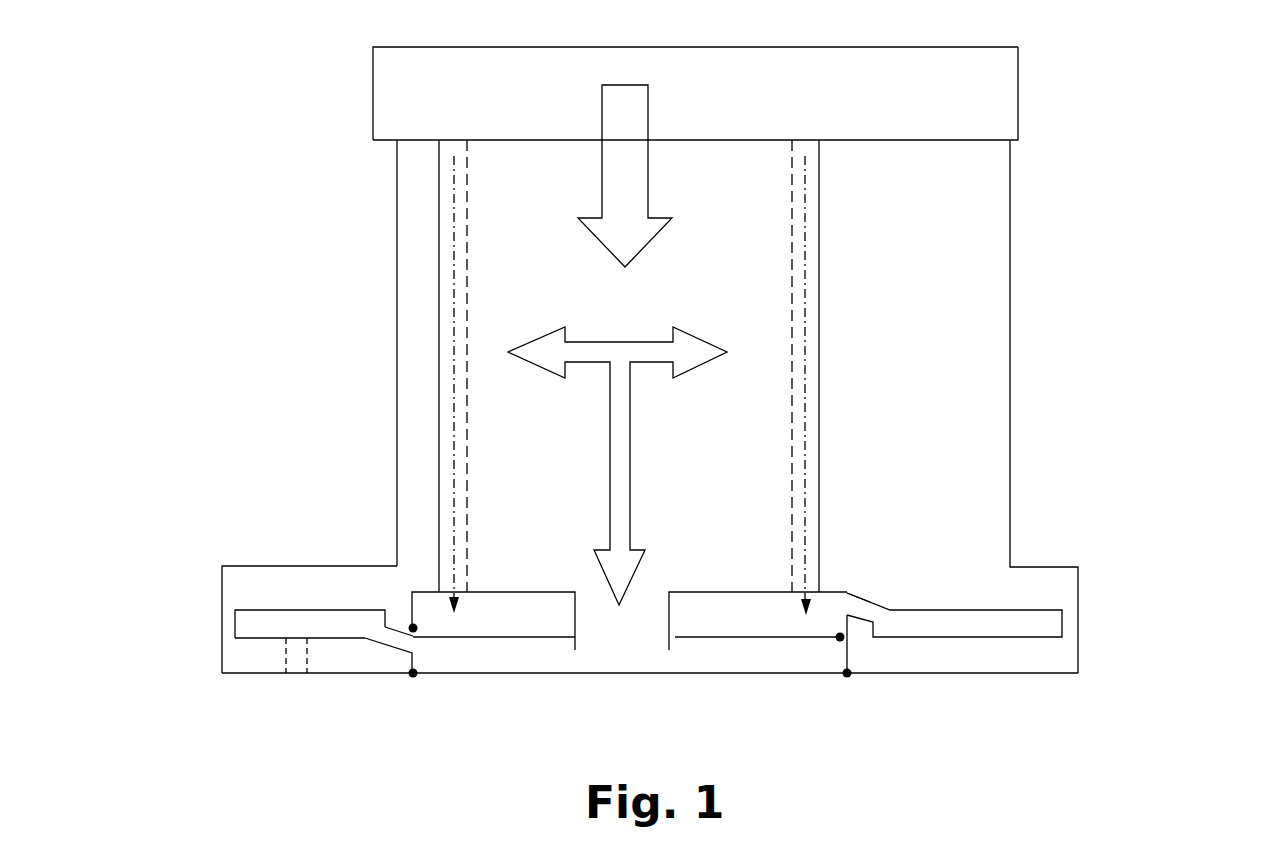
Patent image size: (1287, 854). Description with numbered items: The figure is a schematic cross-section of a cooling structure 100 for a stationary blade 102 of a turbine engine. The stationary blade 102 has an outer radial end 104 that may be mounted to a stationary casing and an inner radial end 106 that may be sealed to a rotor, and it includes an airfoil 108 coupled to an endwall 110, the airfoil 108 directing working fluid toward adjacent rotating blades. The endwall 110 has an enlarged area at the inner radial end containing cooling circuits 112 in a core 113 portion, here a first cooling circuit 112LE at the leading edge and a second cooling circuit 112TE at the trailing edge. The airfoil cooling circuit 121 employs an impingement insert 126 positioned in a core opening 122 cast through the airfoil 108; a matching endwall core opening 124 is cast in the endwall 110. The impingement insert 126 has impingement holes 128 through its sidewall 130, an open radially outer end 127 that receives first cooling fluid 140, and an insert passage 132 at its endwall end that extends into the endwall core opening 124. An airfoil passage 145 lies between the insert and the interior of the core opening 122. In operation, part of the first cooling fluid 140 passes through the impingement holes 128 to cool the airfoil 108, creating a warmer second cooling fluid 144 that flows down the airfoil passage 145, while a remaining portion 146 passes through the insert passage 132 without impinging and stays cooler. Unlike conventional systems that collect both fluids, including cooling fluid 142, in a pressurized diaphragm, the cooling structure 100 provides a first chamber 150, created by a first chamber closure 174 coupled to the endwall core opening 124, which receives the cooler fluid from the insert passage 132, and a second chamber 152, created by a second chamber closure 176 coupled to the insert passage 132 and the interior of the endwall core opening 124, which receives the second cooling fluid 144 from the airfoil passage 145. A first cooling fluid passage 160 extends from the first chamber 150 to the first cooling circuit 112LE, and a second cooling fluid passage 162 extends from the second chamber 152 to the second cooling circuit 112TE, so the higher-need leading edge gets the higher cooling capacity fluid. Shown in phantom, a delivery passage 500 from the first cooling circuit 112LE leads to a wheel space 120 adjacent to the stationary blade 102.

The cooling structure 100 is at (366, 546).
The stationary blade 102 is at (355, 58).
The outer radial end 104 is at (1058, 68).
The inner radial end 106 is at (1088, 691).
The airfoil 108 is at (970, 237).
The endwall 110 is at (247, 593).
The cooling circuits 112 is at (652, 621).
The first cooling circuit 112LE is at (247, 623).
The second cooling circuit 112TE is at (1055, 625).
The core 113 is at (263, 638).
The wheel space 120 is at (417, 753).
The airfoil cooling circuit 121 is at (482, 261).
The core opening 122 is at (819, 325).
The endwall core opening 124 is at (848, 648).
The impingement insert 126 is at (808, 432).
The radially outer end 127 is at (467, 173).
The impingement holes 128 is at (792, 447).
The sidewall 130 is at (798, 367).
The insert passage 132 is at (670, 615).
The first cooling fluid 140 is at (630, 182).
The cooling fluid 142 is at (962, 114).
The second cooling fluid 144 is at (455, 350).
The airfoil passage 145 is at (457, 422).
The remaining portion 146 is at (627, 565).
The first chamber 150 is at (758, 657).
The second chamber 152 is at (503, 620).
The first cooling fluid passage 160 is at (413, 642).
The second cooling fluid passage 162 is at (867, 613).
The first chamber closure 174 is at (628, 675).
The second chamber closure 176 is at (555, 640).
The delivery passage 500 is at (317, 665).